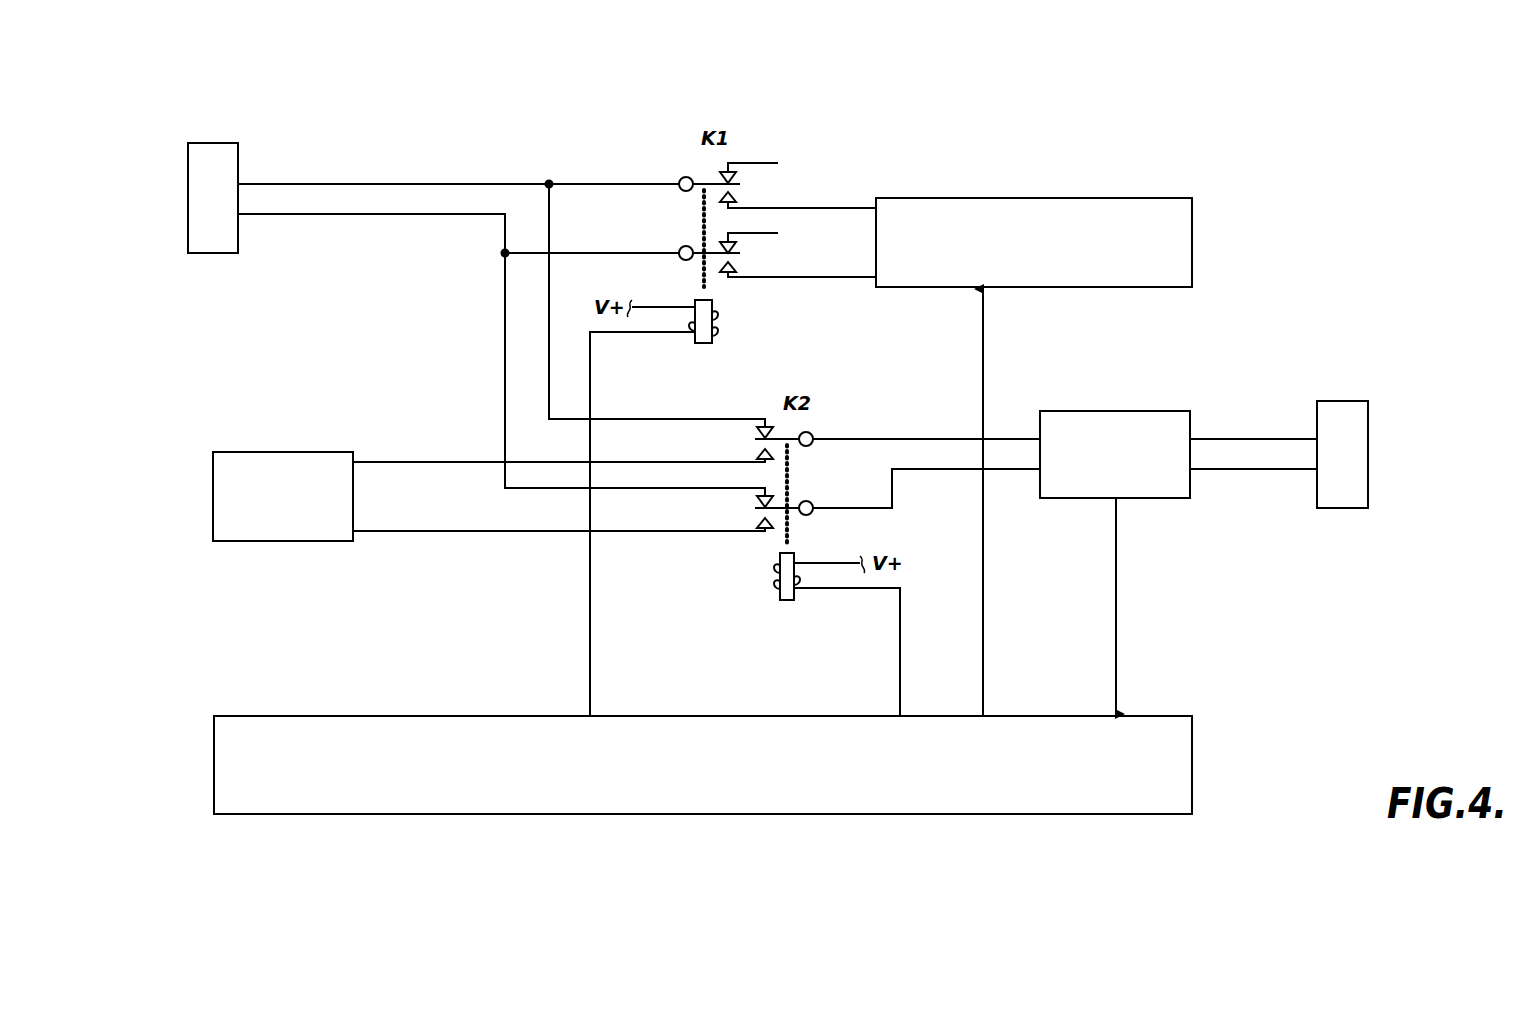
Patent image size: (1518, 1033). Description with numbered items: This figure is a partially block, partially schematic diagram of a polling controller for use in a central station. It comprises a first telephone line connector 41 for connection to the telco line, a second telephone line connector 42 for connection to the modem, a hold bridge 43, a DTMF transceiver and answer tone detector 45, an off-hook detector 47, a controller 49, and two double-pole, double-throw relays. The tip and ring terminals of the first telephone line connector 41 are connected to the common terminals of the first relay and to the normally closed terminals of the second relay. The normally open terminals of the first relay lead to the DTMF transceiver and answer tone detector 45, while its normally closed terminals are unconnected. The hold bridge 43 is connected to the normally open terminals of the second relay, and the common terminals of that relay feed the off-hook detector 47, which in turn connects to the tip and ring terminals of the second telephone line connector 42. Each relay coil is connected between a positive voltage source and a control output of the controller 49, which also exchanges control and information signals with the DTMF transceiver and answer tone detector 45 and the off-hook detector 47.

The first telephone line connector 41 is at (211, 143).
The second telephone line connector 42 is at (1340, 399).
The hold bridge 43 is at (281, 451).
The DTMF transceiver and answer tone detector 45 is at (1031, 197).
The off-hook detector 47 is at (1112, 410).
The controller 49 is at (681, 716).